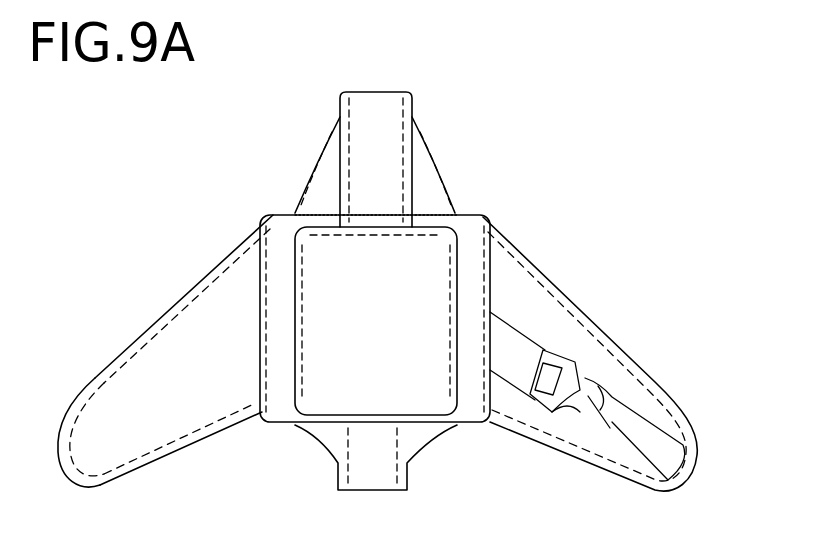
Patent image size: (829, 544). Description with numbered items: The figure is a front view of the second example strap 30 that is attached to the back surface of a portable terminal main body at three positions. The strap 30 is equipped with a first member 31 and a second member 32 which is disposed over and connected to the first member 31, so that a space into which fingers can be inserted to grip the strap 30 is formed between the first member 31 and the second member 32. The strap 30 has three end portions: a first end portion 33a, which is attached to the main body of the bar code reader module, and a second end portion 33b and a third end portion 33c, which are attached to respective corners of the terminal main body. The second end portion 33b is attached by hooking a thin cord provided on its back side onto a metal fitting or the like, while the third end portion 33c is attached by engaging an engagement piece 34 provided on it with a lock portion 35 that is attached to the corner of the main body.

The strap 30 is at (465, 213).
The first member 31 is at (318, 262).
The second member 32 is at (195, 322).
The first end portion 33a is at (360, 105).
The second end portion 33b is at (77, 462).
The third end portion 33c is at (673, 442).
The engagement piece 34 is at (570, 363).
The lock portion 35 is at (607, 402).